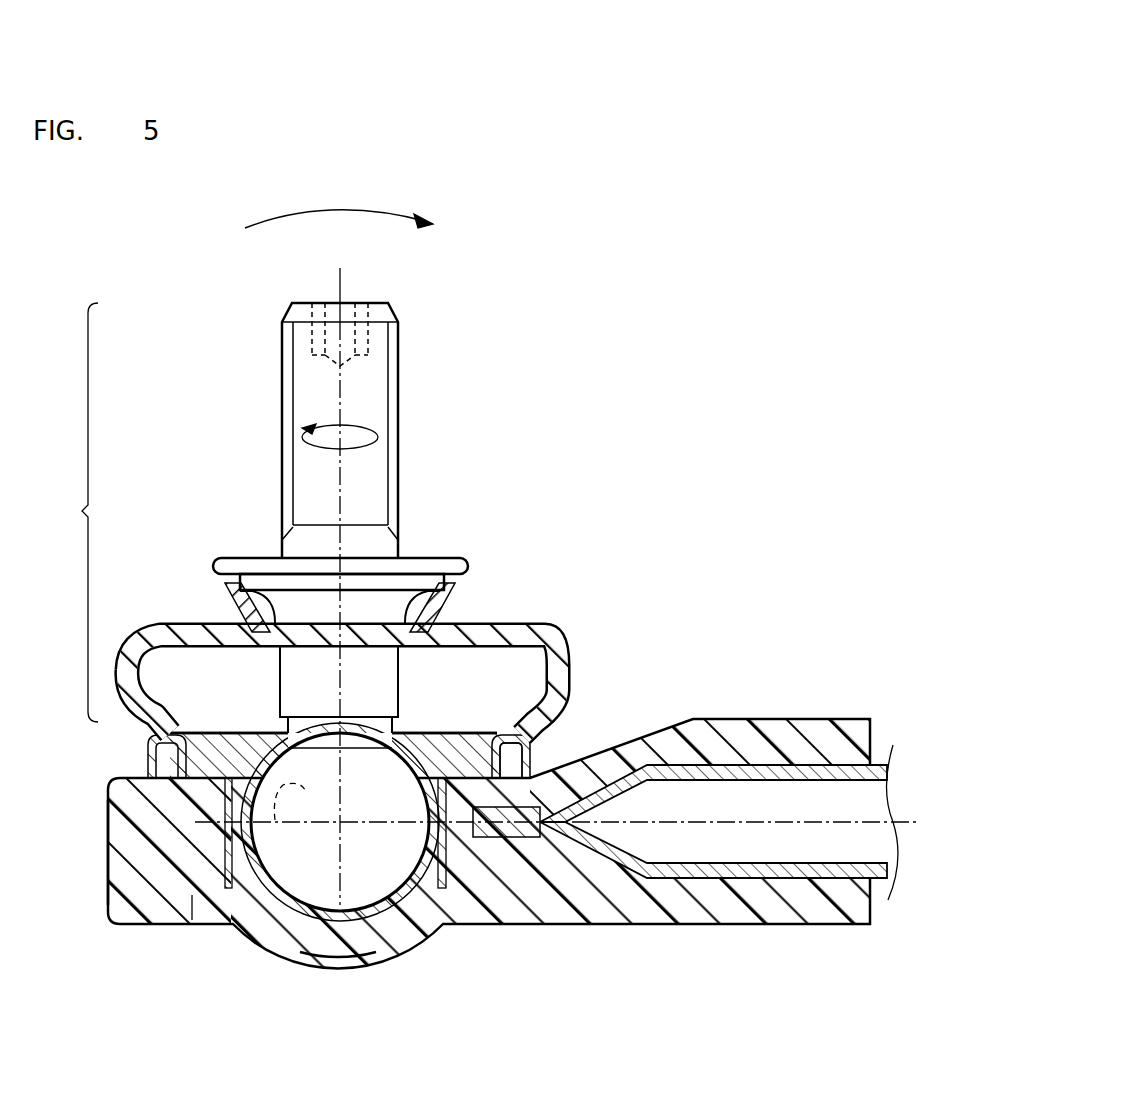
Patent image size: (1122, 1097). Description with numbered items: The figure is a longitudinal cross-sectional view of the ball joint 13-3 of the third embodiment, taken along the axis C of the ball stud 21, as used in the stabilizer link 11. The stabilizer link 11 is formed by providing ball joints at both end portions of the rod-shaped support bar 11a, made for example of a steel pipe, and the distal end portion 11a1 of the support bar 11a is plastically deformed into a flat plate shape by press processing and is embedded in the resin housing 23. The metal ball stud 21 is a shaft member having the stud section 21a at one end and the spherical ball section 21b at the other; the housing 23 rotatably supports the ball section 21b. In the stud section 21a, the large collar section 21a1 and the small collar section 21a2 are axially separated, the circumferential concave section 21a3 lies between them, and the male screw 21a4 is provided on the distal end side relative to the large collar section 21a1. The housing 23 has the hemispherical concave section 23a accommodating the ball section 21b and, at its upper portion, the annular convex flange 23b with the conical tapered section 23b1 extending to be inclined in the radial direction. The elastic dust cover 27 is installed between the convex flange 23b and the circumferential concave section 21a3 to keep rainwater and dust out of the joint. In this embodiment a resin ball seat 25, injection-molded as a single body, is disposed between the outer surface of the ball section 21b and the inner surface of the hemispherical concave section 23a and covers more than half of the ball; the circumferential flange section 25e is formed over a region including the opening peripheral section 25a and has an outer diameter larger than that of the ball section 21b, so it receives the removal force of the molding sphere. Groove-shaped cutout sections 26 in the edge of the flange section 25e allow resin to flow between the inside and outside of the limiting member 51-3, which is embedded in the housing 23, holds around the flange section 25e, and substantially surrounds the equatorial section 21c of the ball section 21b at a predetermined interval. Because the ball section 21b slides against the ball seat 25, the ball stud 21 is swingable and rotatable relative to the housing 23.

The stabilizer link 11 is at (683, 355).
The support bar 11a is at (801, 758).
The distal end portion 11a1 is at (500, 865).
The ball joint 13-3 is at (98, 870).
The ball stud 21 is at (418, 380).
The stud section 21a is at (61, 512).
The large collar section 21a1 is at (468, 568).
The small collar section 21a2 is at (228, 620).
The circumferential concave section 21a3 is at (447, 607).
The male screw 21a4 is at (283, 392).
The ball section 21b is at (312, 865).
The equatorial section 21c is at (273, 870).
The housing 23 is at (134, 895).
The hemispherical concave section 23a is at (388, 930).
The convex flange 23b is at (548, 738).
The tapered section 23b1 is at (530, 722).
The ball seat 25 is at (252, 880).
The opening peripheral section 25a is at (246, 732).
The flange section 25e is at (420, 732).
The cutout sections 26 is at (225, 800).
The dust cover 27 is at (556, 657).
The limiting member 51-3 is at (192, 895).
The axis C is at (362, 286).